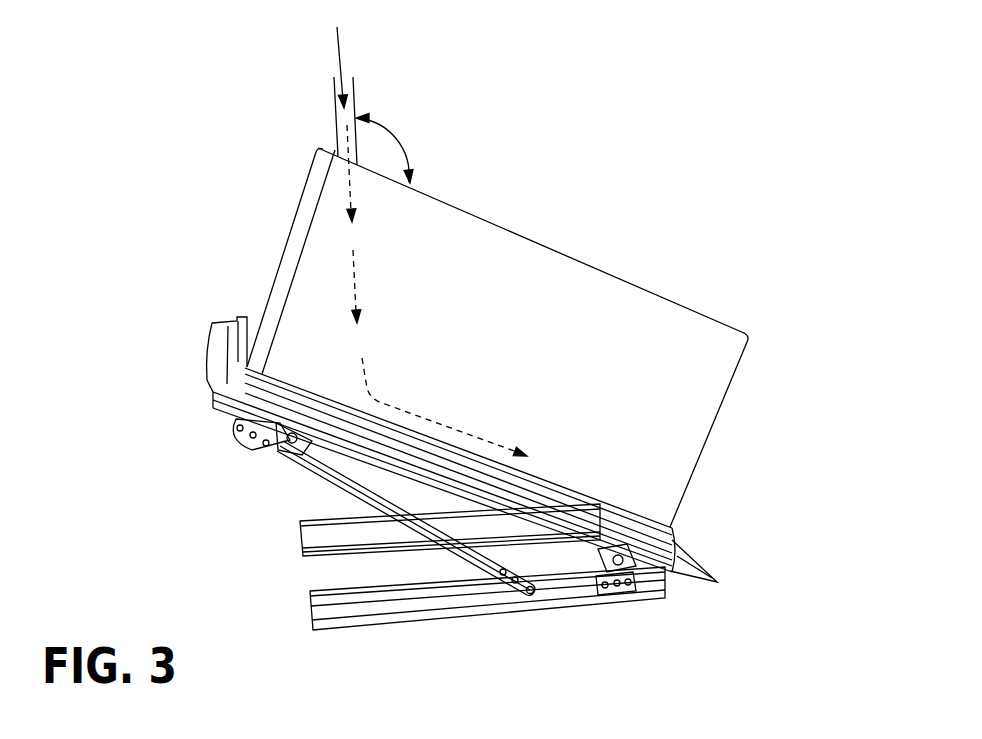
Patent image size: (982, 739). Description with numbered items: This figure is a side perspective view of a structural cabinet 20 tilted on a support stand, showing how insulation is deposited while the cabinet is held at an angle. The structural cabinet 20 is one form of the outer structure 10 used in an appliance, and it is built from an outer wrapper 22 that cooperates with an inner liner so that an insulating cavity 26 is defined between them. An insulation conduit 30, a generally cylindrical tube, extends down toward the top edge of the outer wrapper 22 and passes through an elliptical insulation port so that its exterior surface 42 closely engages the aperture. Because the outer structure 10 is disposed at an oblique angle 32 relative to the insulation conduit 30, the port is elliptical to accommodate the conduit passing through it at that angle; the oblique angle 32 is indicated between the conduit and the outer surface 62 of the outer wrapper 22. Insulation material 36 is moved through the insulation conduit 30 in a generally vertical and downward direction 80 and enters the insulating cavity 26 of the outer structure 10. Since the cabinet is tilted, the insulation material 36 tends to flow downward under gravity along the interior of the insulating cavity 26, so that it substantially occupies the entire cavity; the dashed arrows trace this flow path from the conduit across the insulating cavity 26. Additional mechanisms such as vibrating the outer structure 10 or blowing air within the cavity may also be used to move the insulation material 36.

The outer structure 10 is at (658, 250).
The structural cabinet 20 is at (262, 238).
The outer wrapper 22 is at (680, 425).
The insulating cavity 26 is at (550, 293).
The insulation conduit 30 is at (360, 82).
The oblique angle 32 is at (394, 135).
The insulation material 36 is at (355, 282).
The exterior surface 42 is at (333, 107).
The outer surface 62 is at (520, 396).
The generally vertical and downward direction 80 is at (337, 58).